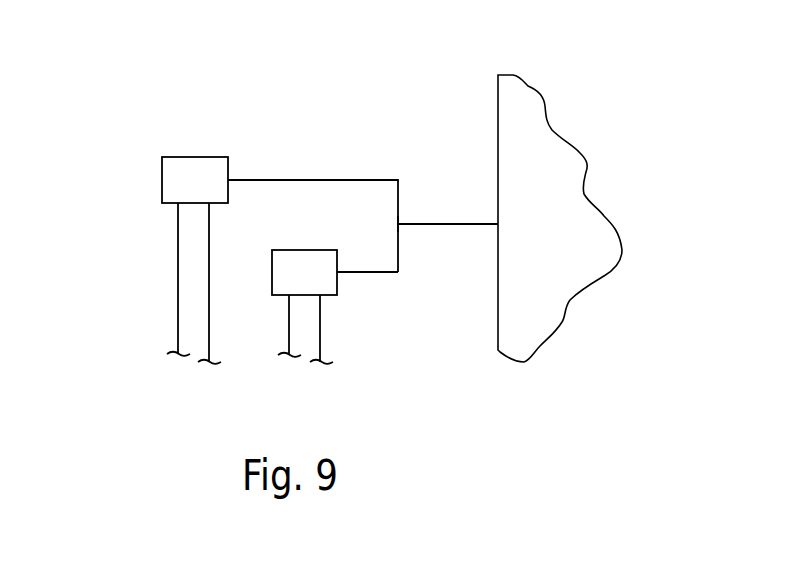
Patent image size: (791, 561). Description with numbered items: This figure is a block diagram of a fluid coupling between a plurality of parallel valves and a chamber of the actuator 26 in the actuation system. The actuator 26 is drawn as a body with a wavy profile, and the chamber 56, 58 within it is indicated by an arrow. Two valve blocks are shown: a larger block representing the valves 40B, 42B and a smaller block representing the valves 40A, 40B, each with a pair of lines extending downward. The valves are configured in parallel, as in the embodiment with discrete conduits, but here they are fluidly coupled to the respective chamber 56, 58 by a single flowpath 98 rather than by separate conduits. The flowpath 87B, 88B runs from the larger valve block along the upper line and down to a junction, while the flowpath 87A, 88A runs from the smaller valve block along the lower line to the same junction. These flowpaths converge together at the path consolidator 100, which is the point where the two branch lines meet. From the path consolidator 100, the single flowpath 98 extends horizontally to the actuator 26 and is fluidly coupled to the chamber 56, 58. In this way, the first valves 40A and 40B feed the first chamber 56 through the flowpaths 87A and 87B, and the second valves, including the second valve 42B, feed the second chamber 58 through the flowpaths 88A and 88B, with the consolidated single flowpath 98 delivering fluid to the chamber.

The actuator 26 is at (590, 194).
The first valve 40A is at (303, 234).
The first valve 40B is at (134, 257).
The second valve 42B is at (162, 180).
The first chamber 56 is at (590, 194).
The second chamber 58 is at (534, 82).
The flowpath 87A is at (387, 303).
The flowpath 88A is at (365, 273).
The flowpath 87B is at (313, 199).
The flowpath 88B is at (298, 180).
The single flowpath 98 is at (453, 225).
The path consolidator 100 is at (400, 222).